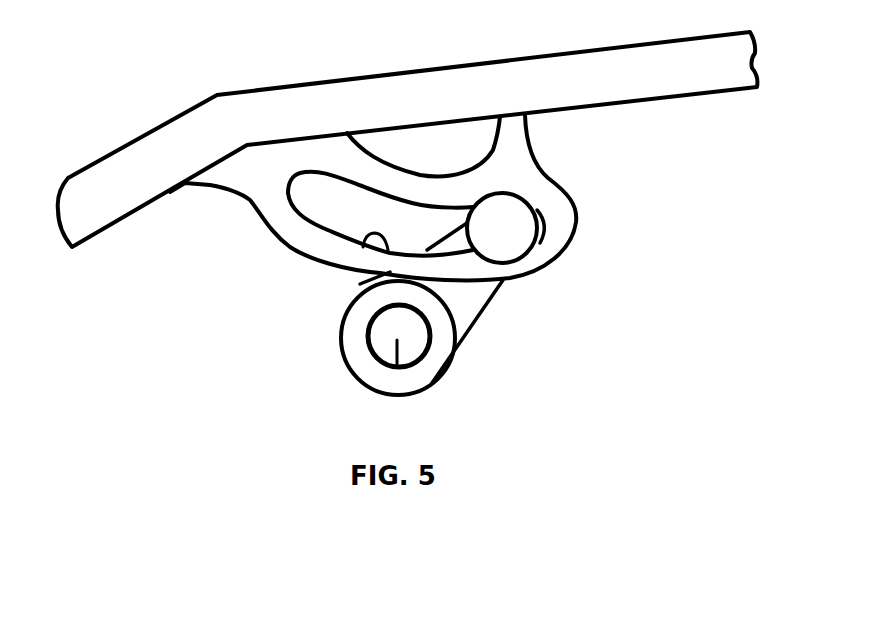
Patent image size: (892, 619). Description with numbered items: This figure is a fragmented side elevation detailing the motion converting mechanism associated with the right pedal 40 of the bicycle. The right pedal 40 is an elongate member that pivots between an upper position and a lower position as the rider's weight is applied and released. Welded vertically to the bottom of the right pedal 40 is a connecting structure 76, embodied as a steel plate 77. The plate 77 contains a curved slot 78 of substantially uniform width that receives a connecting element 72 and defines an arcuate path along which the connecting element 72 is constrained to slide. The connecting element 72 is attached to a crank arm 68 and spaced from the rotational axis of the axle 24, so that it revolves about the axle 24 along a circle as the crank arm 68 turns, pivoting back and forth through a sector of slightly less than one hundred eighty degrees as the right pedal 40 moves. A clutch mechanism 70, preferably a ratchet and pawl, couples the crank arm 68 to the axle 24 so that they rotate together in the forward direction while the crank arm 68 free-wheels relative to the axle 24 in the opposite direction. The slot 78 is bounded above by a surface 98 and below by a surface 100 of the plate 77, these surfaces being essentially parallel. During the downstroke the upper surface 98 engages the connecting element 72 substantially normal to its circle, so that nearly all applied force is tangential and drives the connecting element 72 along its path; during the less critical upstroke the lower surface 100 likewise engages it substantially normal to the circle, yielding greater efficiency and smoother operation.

The right pedal 40 is at (217, 95).
The upper bounding surface 98 is at (405, 210).
The connecting structure 76 is at (247, 278).
The plate 77 is at (248, 173).
The curved slot 78 is at (360, 218).
The lower bounding surface 100 is at (363, 247).
The connecting element 72 is at (547, 210).
The crank arm 68 is at (474, 307).
The clutch mechanism 70 is at (431, 372).
The axle 24 is at (390, 363).